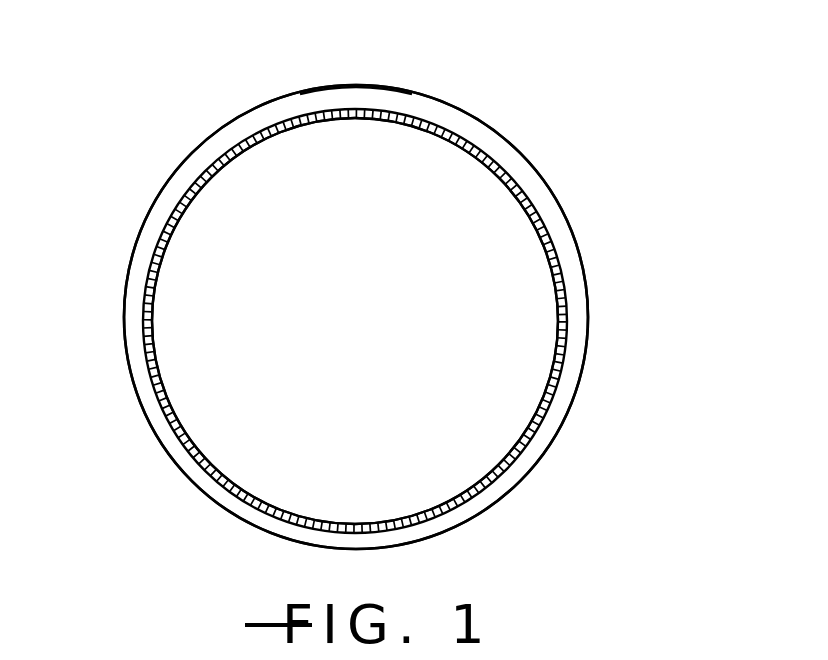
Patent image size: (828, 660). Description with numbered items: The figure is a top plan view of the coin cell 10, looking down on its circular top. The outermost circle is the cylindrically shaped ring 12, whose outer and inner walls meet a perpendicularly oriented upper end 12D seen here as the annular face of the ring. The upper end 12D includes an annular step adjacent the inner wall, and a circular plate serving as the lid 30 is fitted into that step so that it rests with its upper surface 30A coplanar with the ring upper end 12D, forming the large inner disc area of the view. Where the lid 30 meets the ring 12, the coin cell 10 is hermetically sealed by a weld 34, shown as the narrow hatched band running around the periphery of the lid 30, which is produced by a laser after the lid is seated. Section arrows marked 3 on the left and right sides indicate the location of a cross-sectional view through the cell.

The cable assembly 10 is at (504, 96).
The jacket 12 is at (237, 120).
The jacket outer surface 12D is at (391, 98).
The tape layer 30 is at (510, 260).
The tape inner surface 30A is at (470, 211).
The shield strands 34 is at (558, 395).
The section line 3 is at (108, 320).